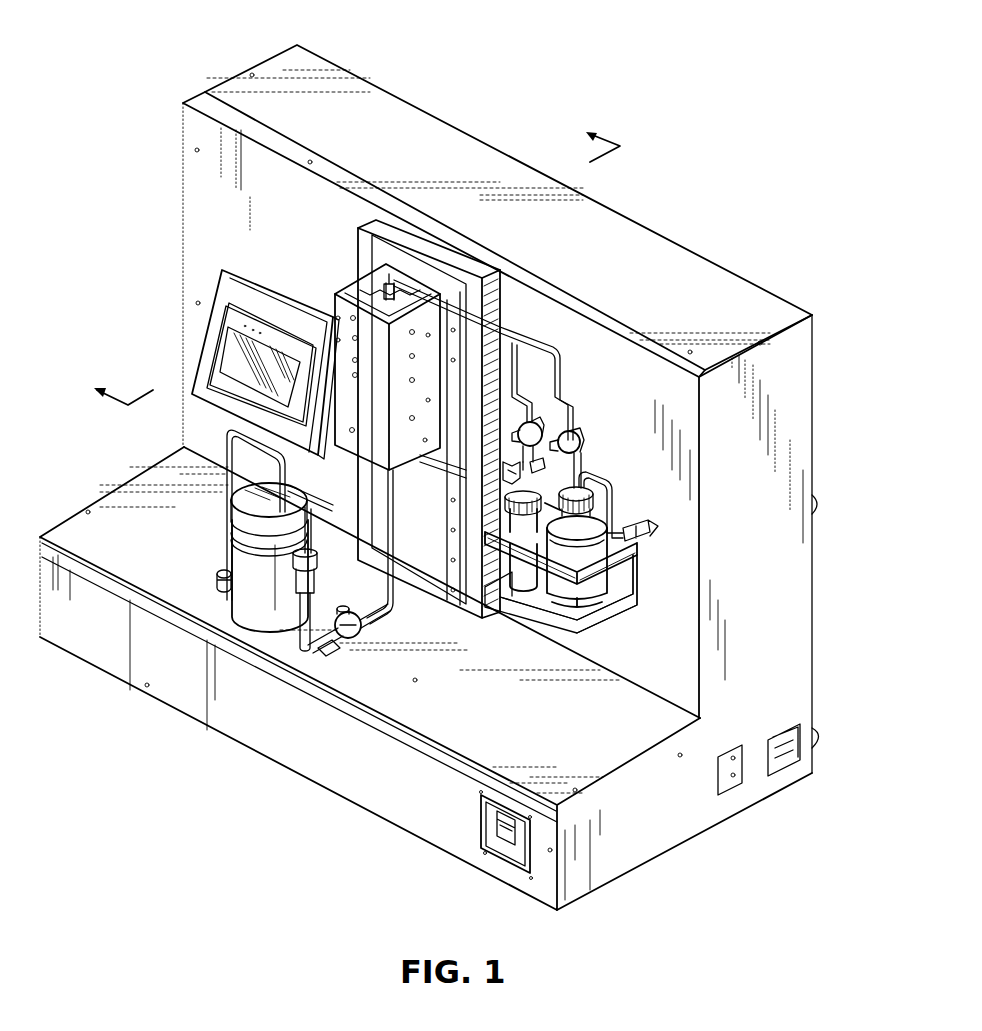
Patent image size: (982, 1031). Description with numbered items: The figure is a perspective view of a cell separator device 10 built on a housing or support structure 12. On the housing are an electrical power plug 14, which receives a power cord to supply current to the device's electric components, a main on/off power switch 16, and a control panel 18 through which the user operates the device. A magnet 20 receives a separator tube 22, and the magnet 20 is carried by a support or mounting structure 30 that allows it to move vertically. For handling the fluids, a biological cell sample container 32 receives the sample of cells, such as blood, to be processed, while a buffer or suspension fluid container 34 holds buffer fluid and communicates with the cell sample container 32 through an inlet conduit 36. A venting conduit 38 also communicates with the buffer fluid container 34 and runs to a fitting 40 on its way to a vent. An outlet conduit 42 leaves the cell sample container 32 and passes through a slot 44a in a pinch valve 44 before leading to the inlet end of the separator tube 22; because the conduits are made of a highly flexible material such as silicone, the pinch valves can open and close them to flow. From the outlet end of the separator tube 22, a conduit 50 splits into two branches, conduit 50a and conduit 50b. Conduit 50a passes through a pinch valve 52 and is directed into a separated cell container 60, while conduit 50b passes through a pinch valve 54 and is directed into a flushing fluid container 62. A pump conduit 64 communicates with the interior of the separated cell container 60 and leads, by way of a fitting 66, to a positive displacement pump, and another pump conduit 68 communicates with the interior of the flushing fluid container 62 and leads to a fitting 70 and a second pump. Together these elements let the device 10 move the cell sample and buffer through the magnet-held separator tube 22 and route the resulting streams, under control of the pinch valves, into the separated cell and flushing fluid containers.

The device 10 is at (688, 66).
The housing or support structure 12 is at (658, 228).
The electrical power plug 14 is at (788, 756).
The main on/off power switch 16 is at (498, 838).
The control panel 18 is at (222, 352).
The magnet 20 is at (343, 288).
The separator tube 22 is at (386, 295).
The support or mounting structure 30 is at (432, 280).
The biological cell sample container 32 is at (292, 618).
The buffer or suspension fluid container 34 is at (225, 578).
The inlet conduit 36 is at (231, 545).
The venting conduit 38 is at (213, 478).
The fitting 40 is at (222, 582).
The outlet conduit 42 is at (317, 645).
The pinch valve 44 is at (367, 630).
The slot 44a is at (357, 647).
The conduit 50 is at (505, 330).
The conduit 50a is at (541, 350).
The conduit 50b is at (583, 413).
The pinch valve 52 is at (535, 423).
The pinch valve 54 is at (585, 442).
The separated cell container 60 is at (513, 575).
The flushing fluid container 62 is at (602, 619).
The pump conduit 64 is at (505, 465).
The fitting 66 is at (545, 467).
The pump conduit 68 is at (614, 507).
The fitting 70 is at (647, 540).